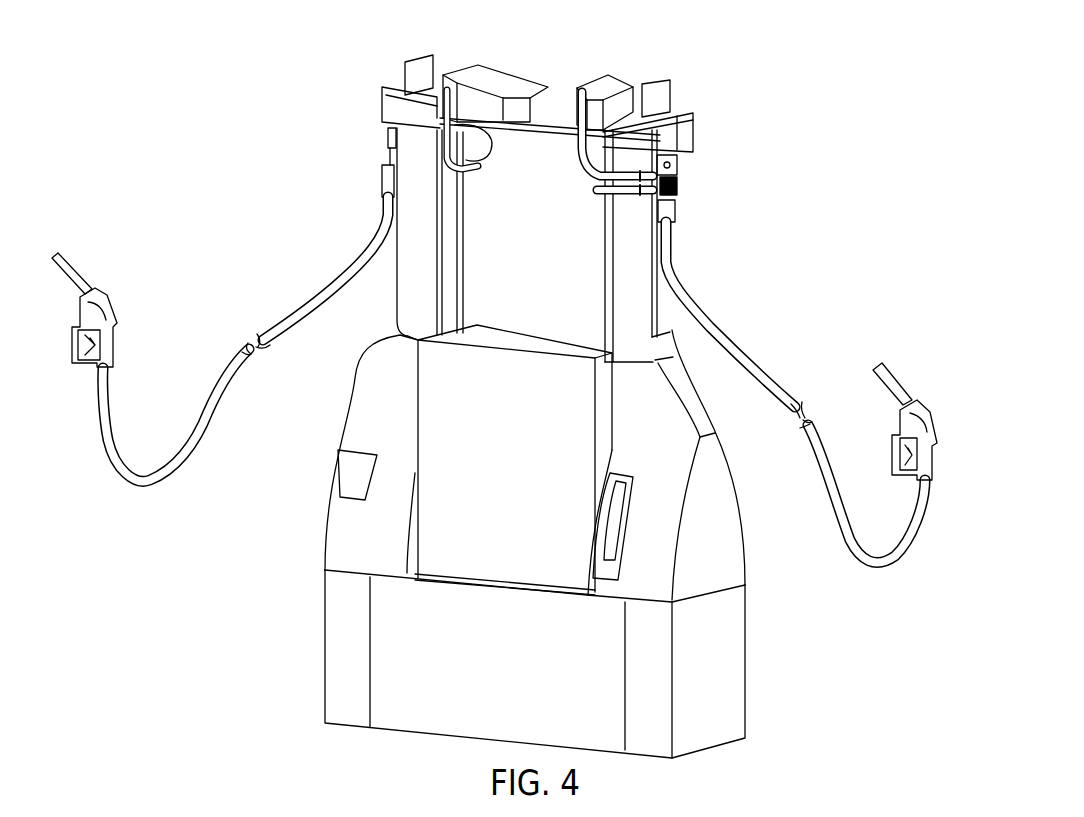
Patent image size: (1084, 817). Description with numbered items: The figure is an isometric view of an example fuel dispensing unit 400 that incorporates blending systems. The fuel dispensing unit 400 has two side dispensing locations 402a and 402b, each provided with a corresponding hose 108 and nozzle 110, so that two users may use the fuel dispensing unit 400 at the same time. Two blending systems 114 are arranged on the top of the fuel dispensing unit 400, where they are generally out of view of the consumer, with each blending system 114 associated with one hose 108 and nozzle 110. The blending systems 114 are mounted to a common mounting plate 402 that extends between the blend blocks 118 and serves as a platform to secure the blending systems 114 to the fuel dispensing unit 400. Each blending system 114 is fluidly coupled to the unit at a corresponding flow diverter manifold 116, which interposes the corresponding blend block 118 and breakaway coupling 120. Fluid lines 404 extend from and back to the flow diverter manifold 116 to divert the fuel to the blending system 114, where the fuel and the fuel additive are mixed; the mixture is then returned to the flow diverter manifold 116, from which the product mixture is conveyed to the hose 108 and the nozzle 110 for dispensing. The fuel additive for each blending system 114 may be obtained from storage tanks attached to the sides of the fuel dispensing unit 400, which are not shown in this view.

The fuel dispensing unit 400 is at (115, 82).
The common mounting plate 402 is at (531, 127).
The side dispensing location 402a is at (312, 466).
The side dispensing location 402b is at (765, 556).
The fluid lines 404 is at (466, 158).
The blending system 114 is at (489, 52).
The blend block 118 is at (381, 97).
The flow diverter manifold 116 is at (382, 148).
The breakaway coupling 120 is at (382, 174).
The hose 108 is at (150, 486).
The nozzle 110 is at (112, 302).